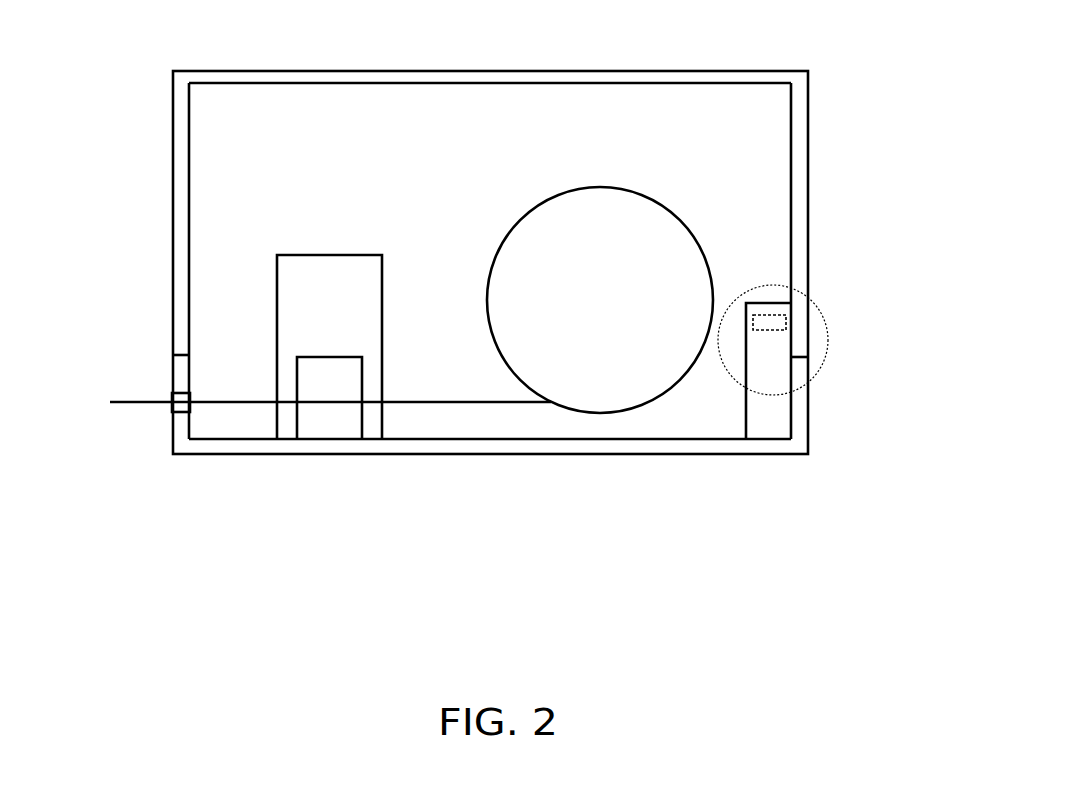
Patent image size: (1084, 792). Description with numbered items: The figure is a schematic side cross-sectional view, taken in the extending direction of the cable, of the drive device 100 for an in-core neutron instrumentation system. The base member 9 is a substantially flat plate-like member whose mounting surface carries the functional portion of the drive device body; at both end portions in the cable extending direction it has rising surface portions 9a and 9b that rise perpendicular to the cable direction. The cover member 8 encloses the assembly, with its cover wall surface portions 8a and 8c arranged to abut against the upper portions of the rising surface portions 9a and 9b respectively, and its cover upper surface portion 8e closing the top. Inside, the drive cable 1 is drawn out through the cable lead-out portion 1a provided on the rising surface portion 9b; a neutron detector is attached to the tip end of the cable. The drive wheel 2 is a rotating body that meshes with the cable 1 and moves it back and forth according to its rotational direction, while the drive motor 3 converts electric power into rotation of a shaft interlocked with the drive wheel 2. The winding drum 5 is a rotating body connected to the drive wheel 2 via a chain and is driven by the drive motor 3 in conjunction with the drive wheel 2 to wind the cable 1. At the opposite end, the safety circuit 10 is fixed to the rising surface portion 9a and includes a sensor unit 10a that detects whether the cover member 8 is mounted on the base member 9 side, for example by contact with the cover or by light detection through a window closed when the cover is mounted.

The drive device 100 is at (841, 500).
The drive cable 1 is at (233, 404).
The cable lead-out portion 1a is at (173, 413).
The drive wheel 2 is at (335, 420).
The drive motor 3 is at (318, 265).
The winding drum 5 is at (620, 393).
The cover member 8 is at (808, 200).
The cover wall surface portion 8a is at (799, 278).
The cover wall surface portion 8c is at (178, 228).
The cover upper surface portion 8e is at (716, 72).
The base member 9 is at (470, 447).
The rising surface portion 9a is at (799, 400).
The rising surface portion 9b is at (175, 378).
The safety circuit 10 is at (770, 420).
The sensor unit 10a is at (780, 320).